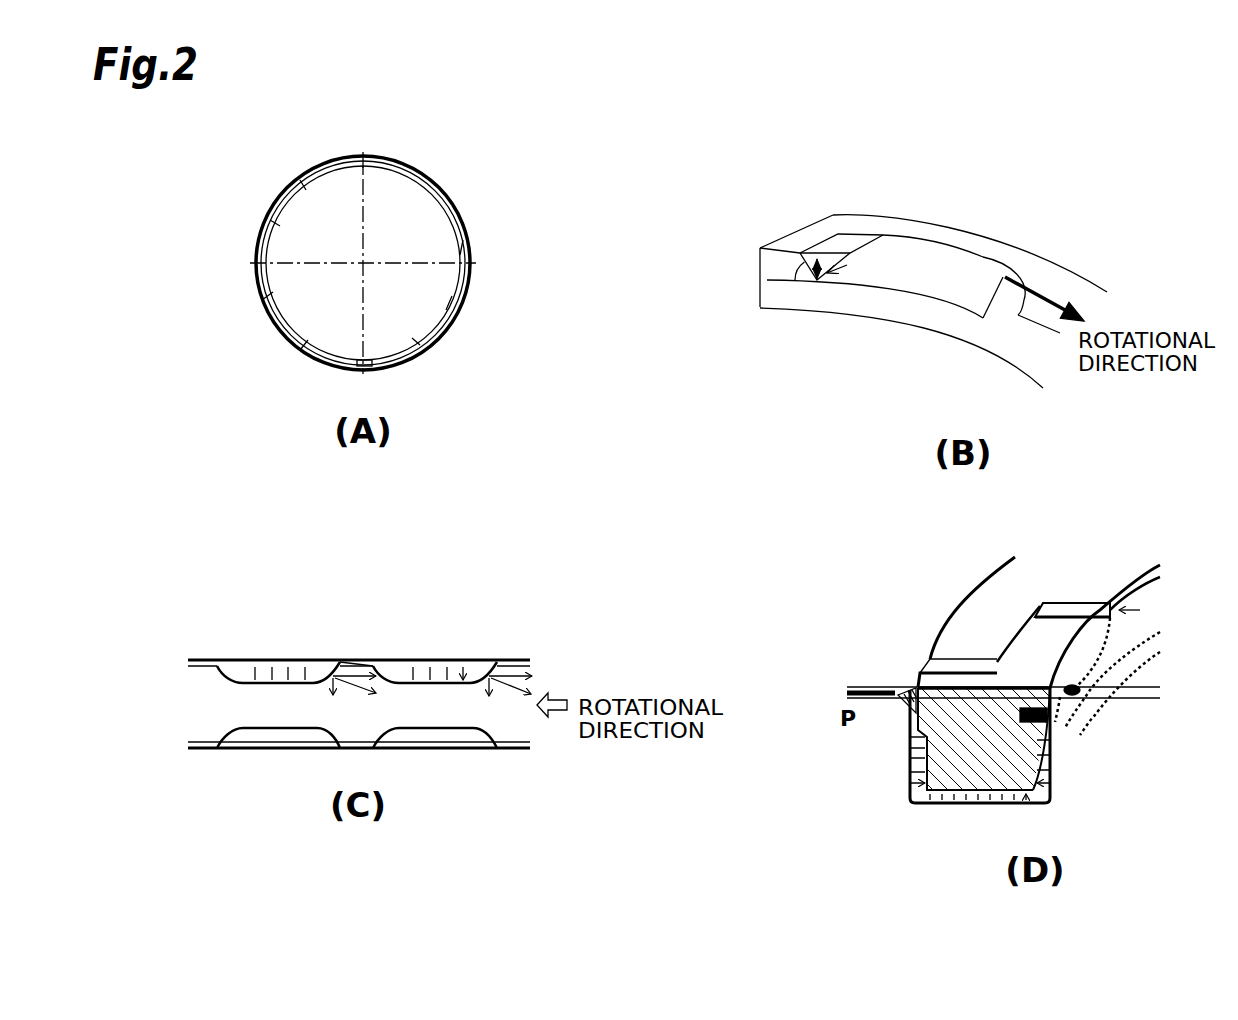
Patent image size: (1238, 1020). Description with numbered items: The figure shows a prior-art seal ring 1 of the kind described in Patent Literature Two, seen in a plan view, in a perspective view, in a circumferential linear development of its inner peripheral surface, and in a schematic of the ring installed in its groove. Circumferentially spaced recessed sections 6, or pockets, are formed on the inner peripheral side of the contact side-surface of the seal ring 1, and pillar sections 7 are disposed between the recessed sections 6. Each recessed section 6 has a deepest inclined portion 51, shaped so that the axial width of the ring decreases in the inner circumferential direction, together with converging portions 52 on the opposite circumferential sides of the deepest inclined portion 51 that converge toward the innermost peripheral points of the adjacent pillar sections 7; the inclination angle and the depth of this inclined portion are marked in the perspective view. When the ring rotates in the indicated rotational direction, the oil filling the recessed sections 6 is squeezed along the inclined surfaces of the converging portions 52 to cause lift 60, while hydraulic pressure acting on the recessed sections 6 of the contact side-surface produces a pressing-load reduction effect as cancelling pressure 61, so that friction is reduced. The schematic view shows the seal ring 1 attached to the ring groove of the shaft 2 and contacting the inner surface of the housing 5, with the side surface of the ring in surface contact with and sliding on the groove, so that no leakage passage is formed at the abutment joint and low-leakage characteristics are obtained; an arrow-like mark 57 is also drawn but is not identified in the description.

In FIG. 2D, the seal ring 1 is at (1097, 650).
In FIG. 2D, the shaft 2 is at (979, 745).
In FIG. 2D, the housing 5 is at (1000, 635).
In FIG. 2A, the recessed sections 6 is at (400, 176).
In FIG. 2B, the recessed sections 6 is at (875, 175).
In FIG. 2C, the recessed sections 6 is at (235, 600).
In FIG. 2A, the pillar sections 7 is at (457, 251).
In FIG. 2B, the pillar sections 7 is at (803, 237).
In FIG. 2C, the pillar sections 7 is at (352, 665).
In FIG. 2B, the deepest inclined portion 51 is at (939, 272).
In FIG. 2C, the deepest inclined portion 51 is at (280, 667).
In FIG. 2B, the converging portions 52 is at (848, 242).
In FIG. 2C, the converging portions 52 is at (237, 666).
In FIG. 2C, the side wall of pocket 57 is at (358, 664).
In FIG. 2C, the lift 60 is at (495, 699).
In FIG. 2C, the cancelling pressure 61 is at (464, 668).